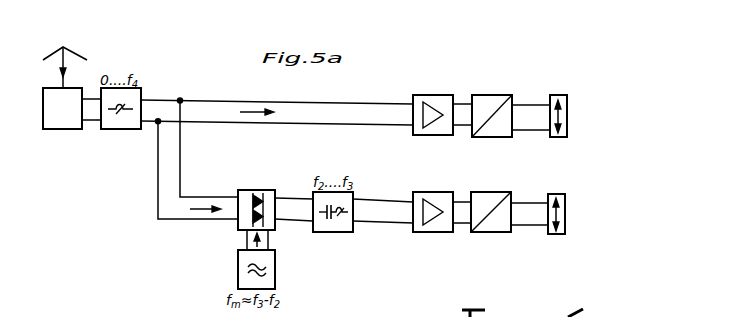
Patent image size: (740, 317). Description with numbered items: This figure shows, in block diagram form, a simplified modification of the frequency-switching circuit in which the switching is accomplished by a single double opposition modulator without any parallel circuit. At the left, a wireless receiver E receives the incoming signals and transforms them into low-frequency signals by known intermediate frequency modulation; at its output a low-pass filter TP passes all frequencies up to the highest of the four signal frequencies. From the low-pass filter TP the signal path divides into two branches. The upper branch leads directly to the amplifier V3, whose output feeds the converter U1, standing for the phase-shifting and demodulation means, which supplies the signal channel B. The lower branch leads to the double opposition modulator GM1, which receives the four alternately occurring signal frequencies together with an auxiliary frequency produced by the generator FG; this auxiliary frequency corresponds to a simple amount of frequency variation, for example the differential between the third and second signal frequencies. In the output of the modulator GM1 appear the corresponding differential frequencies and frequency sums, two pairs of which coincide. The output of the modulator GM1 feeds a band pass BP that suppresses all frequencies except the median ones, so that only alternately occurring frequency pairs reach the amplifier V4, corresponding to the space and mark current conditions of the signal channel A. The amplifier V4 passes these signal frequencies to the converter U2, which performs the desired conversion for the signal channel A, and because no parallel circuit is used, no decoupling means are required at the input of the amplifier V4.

The wireless receiver E is at (62, 108).
The low-pass filter TP is at (121, 117).
The double opposition modulator GM1 is at (256, 201).
The generator FG is at (267, 269).
The band pass BP is at (333, 221).
The amplifier V3 is at (433, 106).
The converter U1 is at (492, 107).
The signal channel B is at (565, 116).
The amplifier V4 is at (433, 203).
The converter U2 is at (491, 203).
The signal channel A is at (563, 214).